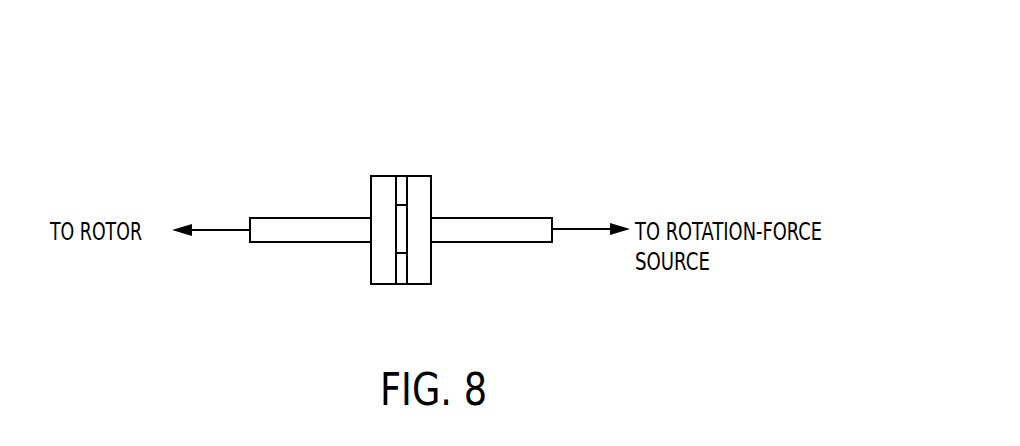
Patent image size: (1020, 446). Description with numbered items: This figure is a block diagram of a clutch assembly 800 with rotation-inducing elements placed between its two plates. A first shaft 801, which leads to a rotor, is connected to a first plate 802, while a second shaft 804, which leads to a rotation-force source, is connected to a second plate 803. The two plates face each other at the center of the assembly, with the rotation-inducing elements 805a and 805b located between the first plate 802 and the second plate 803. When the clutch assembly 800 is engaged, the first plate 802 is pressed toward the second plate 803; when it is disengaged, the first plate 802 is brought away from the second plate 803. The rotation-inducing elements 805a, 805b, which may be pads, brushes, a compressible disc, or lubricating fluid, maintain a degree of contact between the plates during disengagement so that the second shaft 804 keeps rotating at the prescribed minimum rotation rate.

The clutch assembly 800 is at (496, 114).
The first shaft 801 is at (310, 230).
The first plate 802 is at (383, 185).
The second plate 803 is at (417, 185).
The second shaft 804 is at (497, 228).
The rotation-inducing element 805a is at (400, 283).
The rotation-inducing element 805b is at (402, 185).